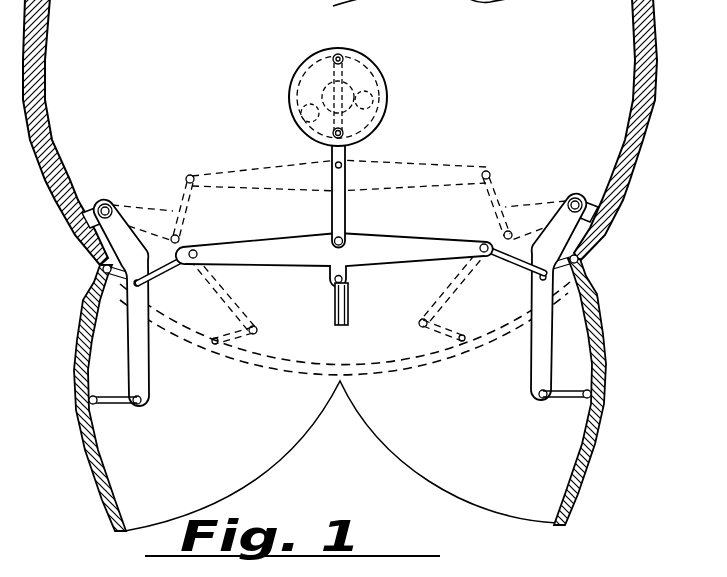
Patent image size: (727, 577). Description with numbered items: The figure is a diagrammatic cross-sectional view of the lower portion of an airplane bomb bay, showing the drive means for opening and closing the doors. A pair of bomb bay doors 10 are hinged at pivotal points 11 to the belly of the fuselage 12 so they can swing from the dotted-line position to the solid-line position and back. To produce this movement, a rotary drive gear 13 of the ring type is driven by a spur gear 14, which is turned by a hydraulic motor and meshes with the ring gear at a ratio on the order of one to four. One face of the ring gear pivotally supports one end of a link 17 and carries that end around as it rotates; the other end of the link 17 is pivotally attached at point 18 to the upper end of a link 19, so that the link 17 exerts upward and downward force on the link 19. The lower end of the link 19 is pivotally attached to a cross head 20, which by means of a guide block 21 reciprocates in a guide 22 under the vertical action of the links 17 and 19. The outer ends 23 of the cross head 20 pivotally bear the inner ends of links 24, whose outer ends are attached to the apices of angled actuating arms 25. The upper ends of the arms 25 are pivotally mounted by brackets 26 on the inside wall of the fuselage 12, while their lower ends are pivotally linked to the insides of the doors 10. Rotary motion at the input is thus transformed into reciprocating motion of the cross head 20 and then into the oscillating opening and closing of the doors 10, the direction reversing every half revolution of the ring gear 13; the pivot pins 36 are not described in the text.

The bomb bay doors 10 is at (93, 488).
The pivotal points 11 is at (580, 259).
The fuselage 12 is at (624, 200).
The rotary drive gear 13 is at (388, 101).
The spur gear 14 is at (300, 117).
The link 17 is at (337, 87).
The pivot point 18 is at (345, 131).
The link 19 is at (346, 204).
The cross head 20 is at (402, 236).
The guide block 21 is at (350, 280).
The guide 22 is at (349, 302).
The outer ends 23 is at (202, 248).
The links 24 is at (163, 278).
The angled actuating arms 25 is at (535, 368).
The brackets 26 is at (105, 204).
The pivot pin 36 is at (336, 48).